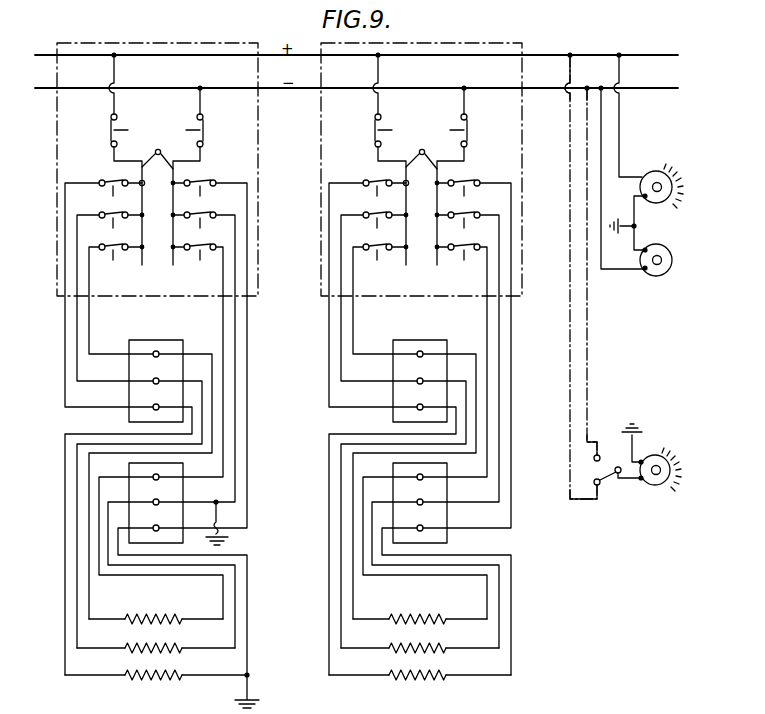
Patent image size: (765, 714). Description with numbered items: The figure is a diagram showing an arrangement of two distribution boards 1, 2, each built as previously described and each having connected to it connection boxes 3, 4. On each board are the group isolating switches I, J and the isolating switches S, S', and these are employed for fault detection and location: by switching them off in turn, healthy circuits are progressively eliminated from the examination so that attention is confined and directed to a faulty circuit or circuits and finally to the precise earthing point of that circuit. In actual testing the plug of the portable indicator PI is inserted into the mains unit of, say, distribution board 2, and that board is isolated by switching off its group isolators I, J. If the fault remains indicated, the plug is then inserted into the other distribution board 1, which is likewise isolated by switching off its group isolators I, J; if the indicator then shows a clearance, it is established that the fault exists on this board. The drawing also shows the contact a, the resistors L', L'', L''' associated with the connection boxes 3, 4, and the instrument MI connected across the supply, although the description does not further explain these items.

The distribution board 1 is at (55, 213).
The distribution board 2 is at (319, 191).
The connection box 3 is at (145, 340).
The connection box 4 is at (393, 491).
The group isolator I is at (243, 130).
The group isolator J is at (331, 130).
The changeover contact a is at (289, 152).
The isolating switch S is at (243, 210).
The isolating switch S' is at (335, 210).
The resistor L' is at (285, 606).
The resistor L'' is at (299, 639).
The resistor L''' is at (298, 688).
The measuring instrument MI is at (650, 226).
The portable indicator PI is at (648, 457).